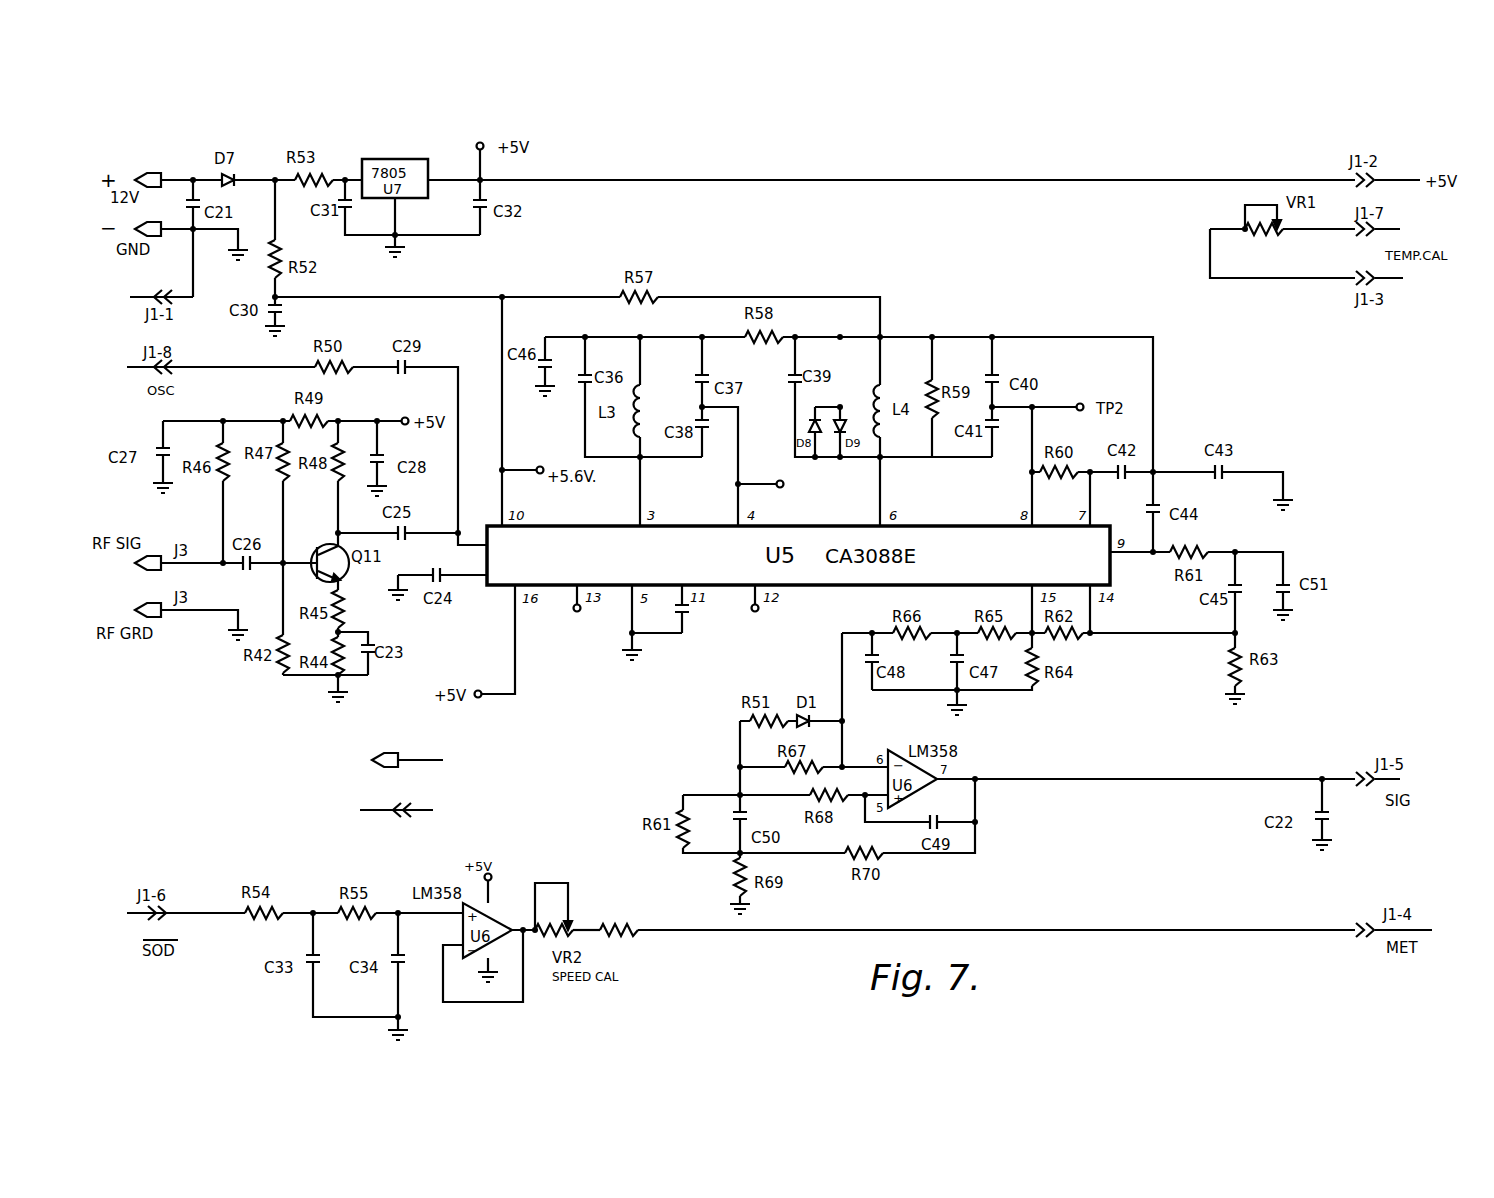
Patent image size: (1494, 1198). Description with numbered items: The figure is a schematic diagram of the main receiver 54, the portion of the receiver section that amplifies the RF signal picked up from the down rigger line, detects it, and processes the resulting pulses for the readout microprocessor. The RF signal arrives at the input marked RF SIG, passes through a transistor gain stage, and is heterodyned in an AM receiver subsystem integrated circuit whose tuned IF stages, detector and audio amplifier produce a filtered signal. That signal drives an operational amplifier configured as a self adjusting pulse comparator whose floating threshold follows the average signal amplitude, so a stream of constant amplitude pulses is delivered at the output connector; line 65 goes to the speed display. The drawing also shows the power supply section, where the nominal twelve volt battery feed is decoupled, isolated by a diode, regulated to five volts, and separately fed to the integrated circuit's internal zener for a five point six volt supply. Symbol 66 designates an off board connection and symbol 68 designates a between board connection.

The main receiver 54 is at (758, 970).
The line 65 is at (1184, 932).
The off board connection symbol 66 is at (377, 758).
The between board connection symbol 68 is at (420, 807).